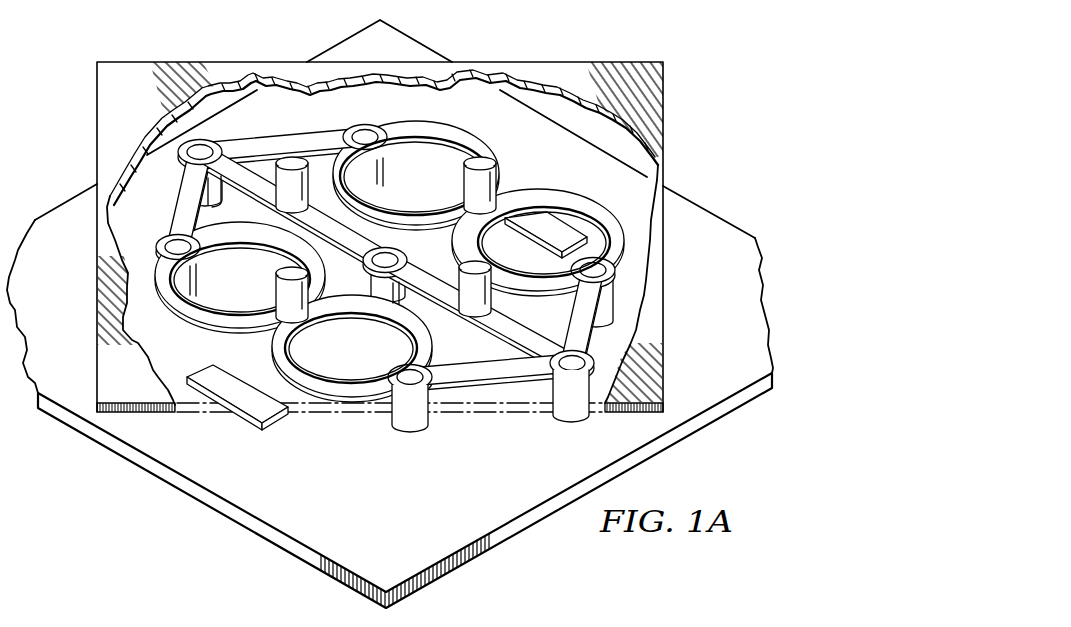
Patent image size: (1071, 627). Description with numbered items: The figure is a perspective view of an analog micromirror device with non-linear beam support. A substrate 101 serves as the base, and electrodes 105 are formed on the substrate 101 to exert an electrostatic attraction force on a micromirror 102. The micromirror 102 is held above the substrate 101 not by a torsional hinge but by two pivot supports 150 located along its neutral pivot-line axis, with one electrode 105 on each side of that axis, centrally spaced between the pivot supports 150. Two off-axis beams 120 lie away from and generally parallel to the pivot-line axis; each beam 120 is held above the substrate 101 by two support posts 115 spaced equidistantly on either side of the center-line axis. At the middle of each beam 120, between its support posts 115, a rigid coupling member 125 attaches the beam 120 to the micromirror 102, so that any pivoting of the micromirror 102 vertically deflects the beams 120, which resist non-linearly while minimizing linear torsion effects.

The substrate 101 is at (405, 537).
The micromirror 102 is at (132, 72).
The electrodes 105 is at (527, 215).
The support posts 115 is at (362, 168).
The off-axis beams 120 is at (587, 208).
The rigid coupling member 125 is at (478, 158).
The pivot supports 150 is at (430, 237).